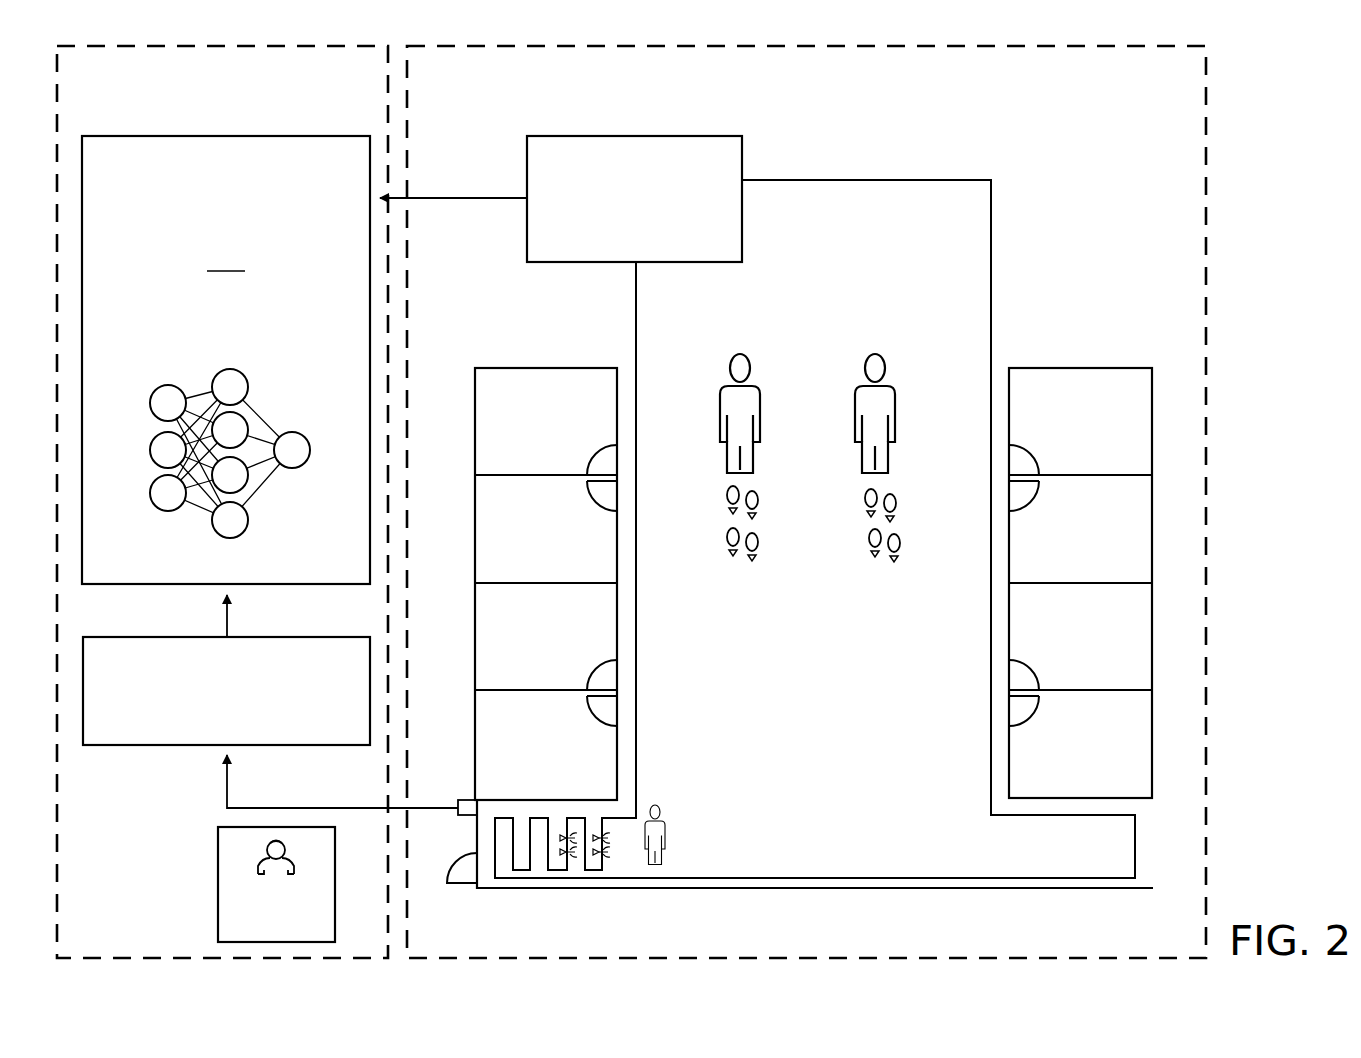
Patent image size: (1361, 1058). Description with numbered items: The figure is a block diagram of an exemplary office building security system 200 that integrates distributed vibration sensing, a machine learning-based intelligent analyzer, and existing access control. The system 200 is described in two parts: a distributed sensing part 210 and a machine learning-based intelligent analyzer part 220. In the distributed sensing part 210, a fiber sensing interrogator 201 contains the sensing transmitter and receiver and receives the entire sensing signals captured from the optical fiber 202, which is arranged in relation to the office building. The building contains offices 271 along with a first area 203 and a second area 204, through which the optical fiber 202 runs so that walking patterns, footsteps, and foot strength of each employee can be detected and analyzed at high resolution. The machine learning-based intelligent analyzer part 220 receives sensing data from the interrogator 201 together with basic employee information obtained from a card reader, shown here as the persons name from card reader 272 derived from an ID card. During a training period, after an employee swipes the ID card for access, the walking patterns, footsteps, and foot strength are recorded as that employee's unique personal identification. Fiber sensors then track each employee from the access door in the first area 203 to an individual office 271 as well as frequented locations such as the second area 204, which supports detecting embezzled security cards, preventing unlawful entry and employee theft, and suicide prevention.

The office building security system 200 is at (1250, 116).
The fiber sensing interrogator 201 is at (615, 243).
The optical fiber 202 is at (828, 172).
The Area-1 203 is at (800, 879).
The Area-2 204 is at (810, 422).
The distributed sensing part 210 is at (786, 112).
The machine learning-based intelligent analyzer part 220 is at (203, 112).
The offices 271 is at (295, 934).
The persons name from card reader 272 is at (207, 735).